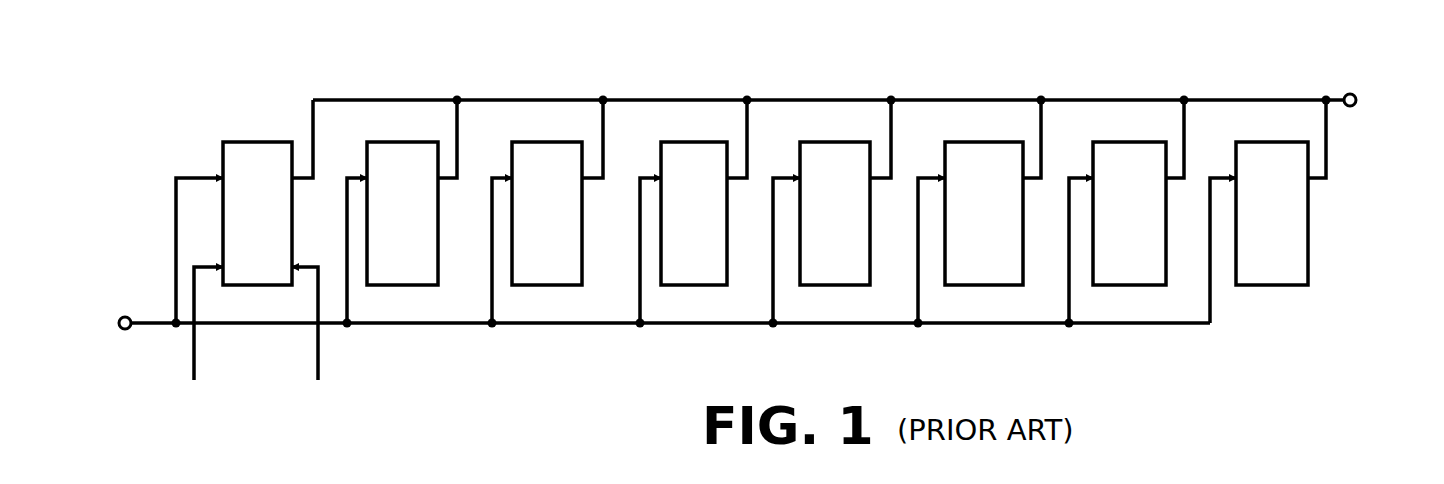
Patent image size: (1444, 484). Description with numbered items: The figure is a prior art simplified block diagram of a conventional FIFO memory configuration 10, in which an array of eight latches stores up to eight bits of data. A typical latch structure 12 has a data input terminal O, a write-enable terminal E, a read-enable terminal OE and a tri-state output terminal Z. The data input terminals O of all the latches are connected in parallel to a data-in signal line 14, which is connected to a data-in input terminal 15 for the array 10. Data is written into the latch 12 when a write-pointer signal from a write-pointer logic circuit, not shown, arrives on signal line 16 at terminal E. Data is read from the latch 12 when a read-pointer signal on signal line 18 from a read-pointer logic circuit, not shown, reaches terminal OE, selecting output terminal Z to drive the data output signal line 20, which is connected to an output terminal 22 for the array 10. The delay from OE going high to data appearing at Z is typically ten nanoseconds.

The FIFO memory configuration 10 is at (1120, 73).
The latch structure 12 is at (252, 140).
The data-in signal line 14 is at (153, 320).
The data-in input terminal 15 is at (125, 330).
The write-pointer signal line 16 is at (194, 355).
The read-pointer signal line 18 is at (318, 355).
The data output signal line 20 is at (805, 98).
The output terminal 22 is at (1350, 107).